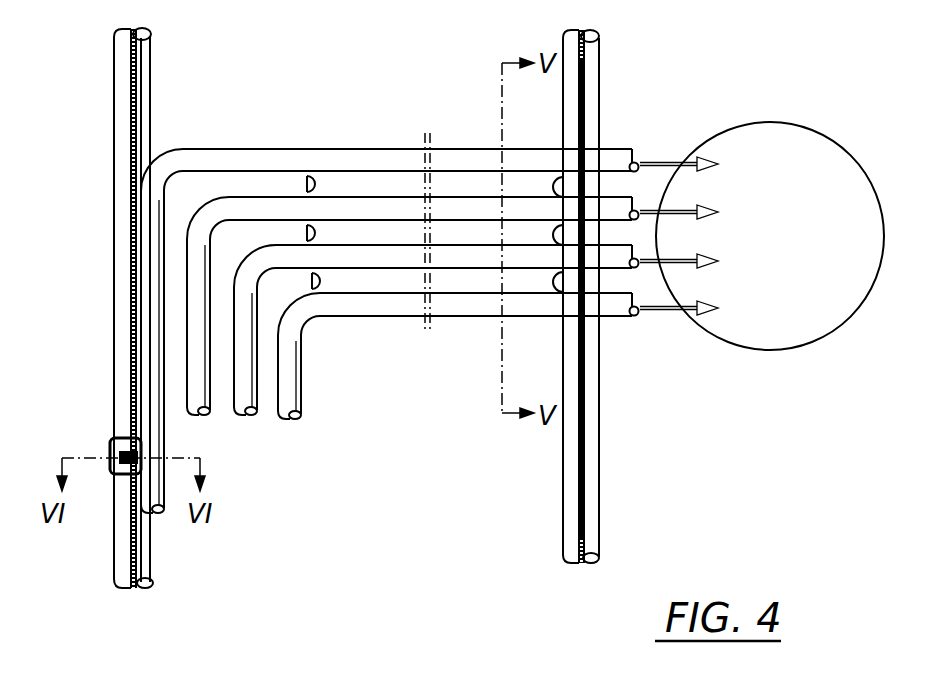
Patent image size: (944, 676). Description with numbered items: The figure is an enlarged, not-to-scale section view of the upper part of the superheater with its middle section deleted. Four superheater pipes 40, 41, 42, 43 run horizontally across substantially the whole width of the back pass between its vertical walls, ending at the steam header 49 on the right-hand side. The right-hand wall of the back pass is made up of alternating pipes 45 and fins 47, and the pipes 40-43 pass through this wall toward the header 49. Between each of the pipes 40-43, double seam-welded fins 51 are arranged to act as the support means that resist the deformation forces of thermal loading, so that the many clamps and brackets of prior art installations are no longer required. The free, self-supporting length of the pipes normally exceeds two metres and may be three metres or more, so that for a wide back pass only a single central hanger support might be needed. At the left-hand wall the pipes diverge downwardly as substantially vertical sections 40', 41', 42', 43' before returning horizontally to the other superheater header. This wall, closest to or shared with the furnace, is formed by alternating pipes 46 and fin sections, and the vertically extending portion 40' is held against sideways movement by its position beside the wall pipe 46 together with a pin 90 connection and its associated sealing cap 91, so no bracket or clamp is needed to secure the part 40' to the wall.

The pipe 40 is at (390, 134).
The pipe 41 is at (413, 158).
The pipe 42 is at (436, 182).
The pipe 43 is at (458, 206).
The vertical section 40' is at (112, 351).
The vertical section 41' is at (135, 327).
The vertical section 42' is at (158, 351).
The vertical section 43' is at (180, 377).
The pipe 45 is at (590, 50).
The pipe 46 is at (113, 72).
The fin 47 is at (583, 85).
The steam header 49 is at (772, 138).
The double seam-welded fin 51 is at (455, 185).
The pin 90 is at (112, 437).
The sealing cap 91 is at (110, 448).